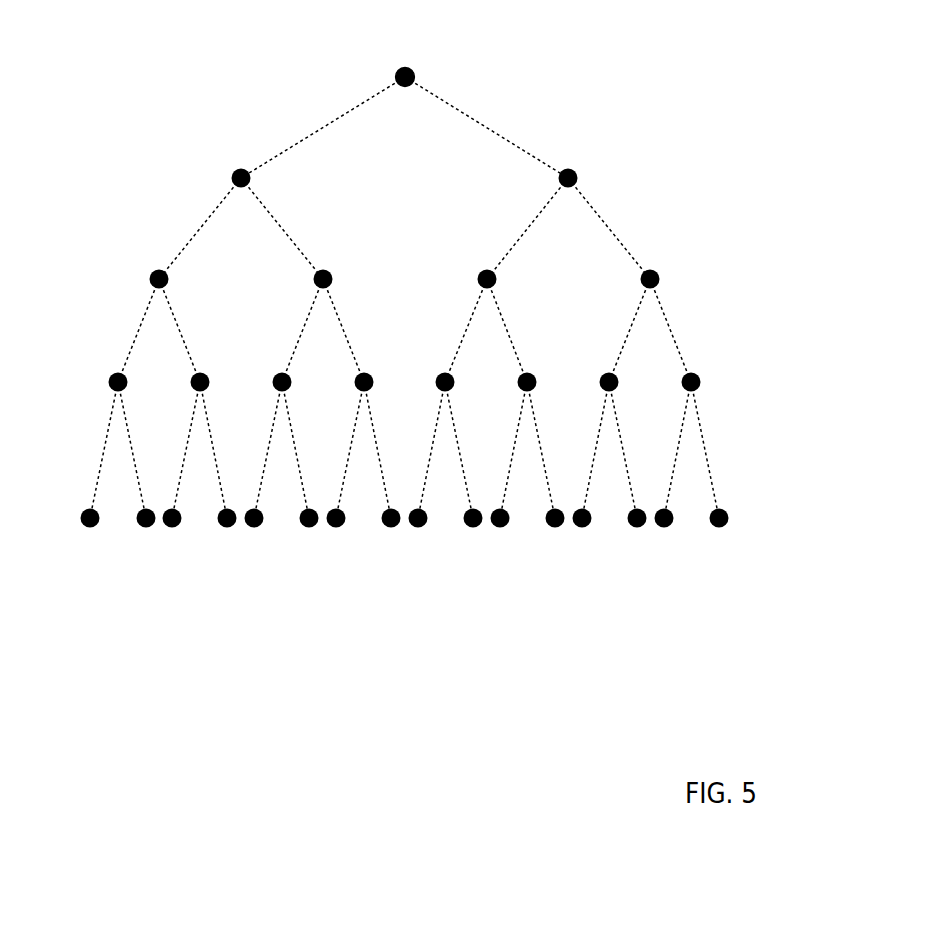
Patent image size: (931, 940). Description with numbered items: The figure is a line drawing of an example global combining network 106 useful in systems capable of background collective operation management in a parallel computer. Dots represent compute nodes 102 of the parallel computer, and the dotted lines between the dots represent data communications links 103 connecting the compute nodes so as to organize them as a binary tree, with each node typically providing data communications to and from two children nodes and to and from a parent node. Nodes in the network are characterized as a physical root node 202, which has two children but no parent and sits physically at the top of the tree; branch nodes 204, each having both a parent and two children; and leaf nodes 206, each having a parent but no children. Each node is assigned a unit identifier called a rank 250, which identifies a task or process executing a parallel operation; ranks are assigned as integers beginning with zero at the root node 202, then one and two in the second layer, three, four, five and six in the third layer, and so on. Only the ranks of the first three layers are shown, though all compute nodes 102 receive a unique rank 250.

The global combining network 106 is at (435, 373).
The data communications links 103 is at (330, 123).
The physical root node 202 is at (527, 53).
The branch nodes 204 is at (738, 132).
The leaf nodes 206 is at (738, 552).
The compute nodes 102 is at (468, 527).
The rank 250 is at (519, 188).